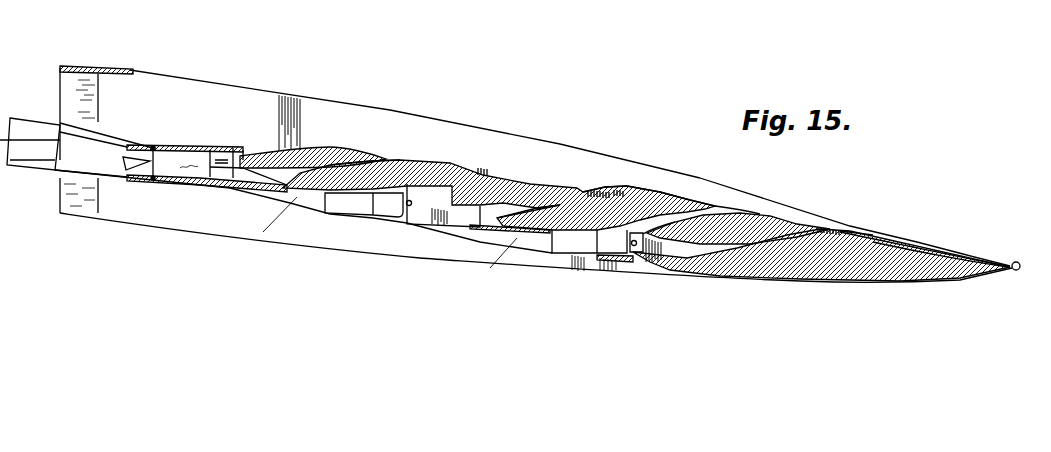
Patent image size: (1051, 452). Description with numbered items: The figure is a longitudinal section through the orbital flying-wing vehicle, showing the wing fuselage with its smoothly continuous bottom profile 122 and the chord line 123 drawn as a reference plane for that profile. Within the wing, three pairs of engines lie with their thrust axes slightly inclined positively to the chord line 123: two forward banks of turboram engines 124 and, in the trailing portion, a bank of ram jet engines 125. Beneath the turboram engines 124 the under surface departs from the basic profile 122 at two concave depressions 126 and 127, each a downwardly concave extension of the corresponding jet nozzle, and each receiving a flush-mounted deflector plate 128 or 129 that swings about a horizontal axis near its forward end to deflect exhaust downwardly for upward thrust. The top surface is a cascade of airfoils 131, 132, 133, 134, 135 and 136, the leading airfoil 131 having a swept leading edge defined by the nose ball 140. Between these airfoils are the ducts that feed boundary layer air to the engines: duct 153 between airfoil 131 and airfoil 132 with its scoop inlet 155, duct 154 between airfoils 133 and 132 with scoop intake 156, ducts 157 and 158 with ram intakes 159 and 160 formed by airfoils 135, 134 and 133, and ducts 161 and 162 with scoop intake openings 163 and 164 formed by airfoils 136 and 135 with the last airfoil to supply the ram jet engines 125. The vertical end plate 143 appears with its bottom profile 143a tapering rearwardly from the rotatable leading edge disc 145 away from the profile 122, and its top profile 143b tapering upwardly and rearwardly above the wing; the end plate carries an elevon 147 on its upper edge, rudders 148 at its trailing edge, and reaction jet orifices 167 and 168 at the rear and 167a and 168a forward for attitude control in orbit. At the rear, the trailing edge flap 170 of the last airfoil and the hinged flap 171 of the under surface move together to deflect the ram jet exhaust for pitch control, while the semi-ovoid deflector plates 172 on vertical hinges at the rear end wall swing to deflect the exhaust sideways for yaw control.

The bottom profile 122 is at (473, 243).
The chord line 123 is at (1030, 268).
The turboram engines 124 is at (587, 254).
The ram jet engines 125 is at (132, 162).
The concave depression 126 is at (537, 242).
The concave depression 127 is at (312, 203).
The deflector plate 128 is at (503, 252).
The deflector plate 129 is at (260, 192).
The leading airfoil 131 is at (262, 126).
The airfoil 132 is at (797, 200).
The airfoil 133 is at (712, 209).
The airfoil 134 is at (600, 173).
The airfoil 135 is at (485, 158).
The airfoil 136 is at (372, 136).
The nose ball 140 is at (1014, 273).
The end plate structure 143 is at (587, 151).
The bottom profile of end plate 143a is at (382, 249).
The top profile of end plate 143b is at (552, 122).
The rotatable disc member 145 is at (910, 277).
The elevon 147 is at (138, 42).
The rudder 148 is at (62, 86).
The duct 153 is at (682, 260).
The duct 154 is at (652, 240).
The scoop inlet 155 is at (850, 232).
The scoop intake 156 is at (708, 211).
The duct 157 is at (430, 215).
The duct 158 is at (444, 205).
The ram intake 159 is at (615, 194).
The ram intake 160 is at (580, 187).
The duct 161 is at (270, 191).
The duct 162 is at (233, 146).
The scoop intake opening 163 is at (382, 160).
The scoop intake opening 164 is at (313, 149).
The upwardly pointing jet orifice 167 is at (280, 74).
The forward upwardly pointing jet orifice 167a is at (815, 226).
The downwardly pointing jet orifice 168 is at (260, 237).
The forward downwardly pointing jet orifice 168a is at (806, 280).
The flap 170 is at (153, 145).
The hinged flap 171 is at (141, 179).
The deflector plate 172 is at (124, 163).